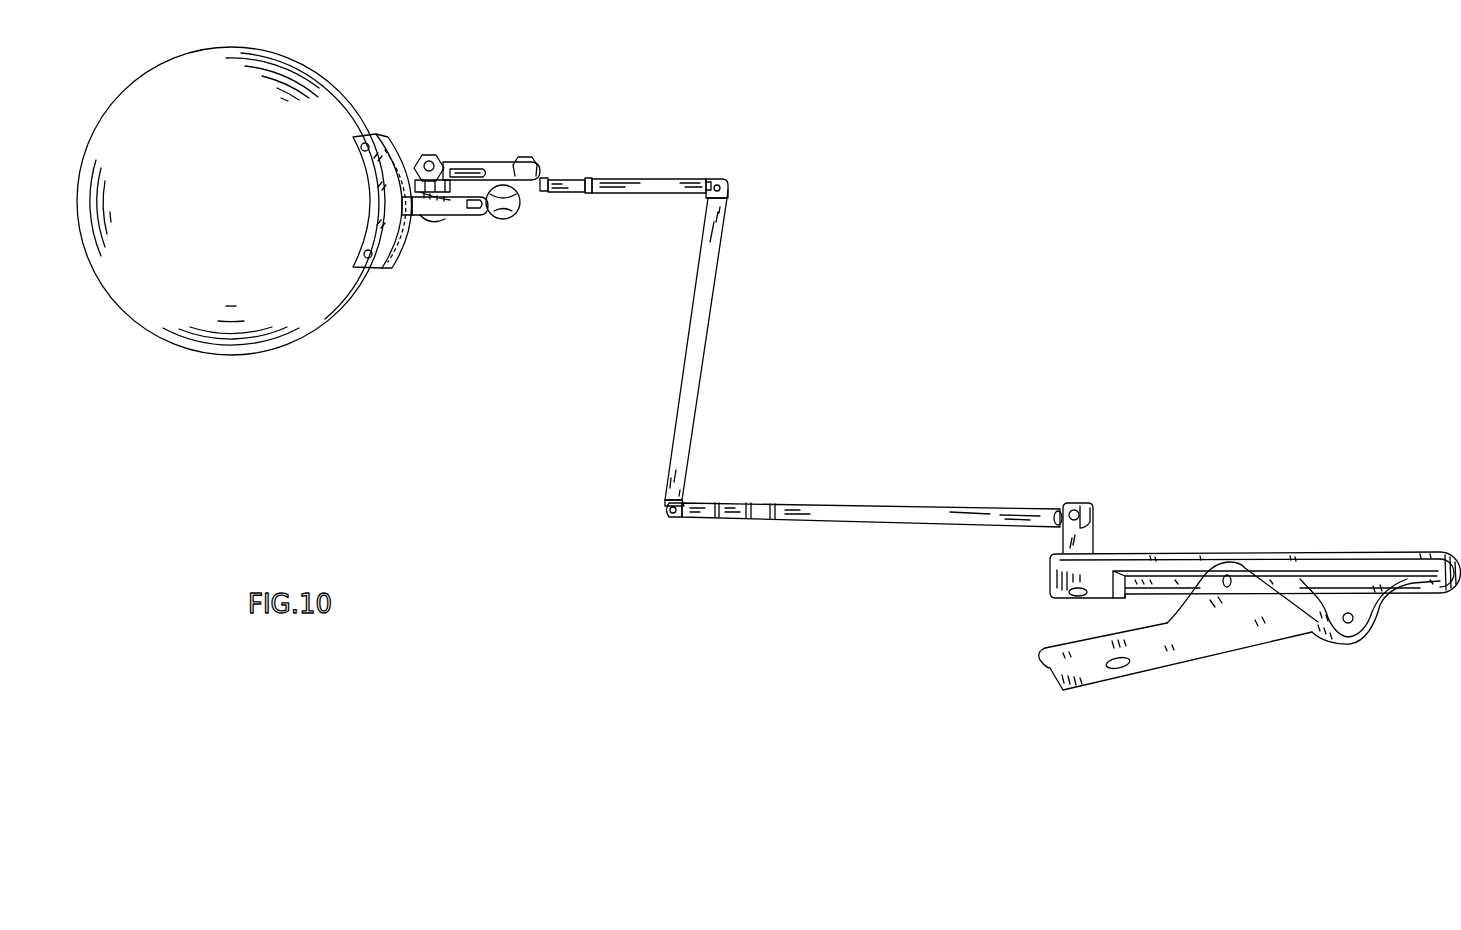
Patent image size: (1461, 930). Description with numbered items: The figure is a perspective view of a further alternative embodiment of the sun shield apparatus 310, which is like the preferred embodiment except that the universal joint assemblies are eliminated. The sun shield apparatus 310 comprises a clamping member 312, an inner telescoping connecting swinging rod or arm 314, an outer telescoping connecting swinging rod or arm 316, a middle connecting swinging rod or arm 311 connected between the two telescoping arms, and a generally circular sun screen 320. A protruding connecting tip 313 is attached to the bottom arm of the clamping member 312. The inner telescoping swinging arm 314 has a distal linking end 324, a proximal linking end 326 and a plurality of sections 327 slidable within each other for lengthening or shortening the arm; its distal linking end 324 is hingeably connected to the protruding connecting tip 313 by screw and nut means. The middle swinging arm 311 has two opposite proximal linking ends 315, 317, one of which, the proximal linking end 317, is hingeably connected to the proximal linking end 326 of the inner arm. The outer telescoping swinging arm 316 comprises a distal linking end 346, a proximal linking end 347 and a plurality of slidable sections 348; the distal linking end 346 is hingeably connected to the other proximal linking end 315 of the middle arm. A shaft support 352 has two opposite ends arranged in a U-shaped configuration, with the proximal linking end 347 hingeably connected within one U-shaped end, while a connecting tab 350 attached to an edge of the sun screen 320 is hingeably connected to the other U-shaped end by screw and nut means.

The sun shield apparatus 310 is at (1034, 255).
The middle connecting swinging rod or arm 311 is at (718, 313).
The clamping member 312 is at (1343, 647).
The protruding connecting tip 313 is at (1093, 543).
The inner telescoping connecting swinging rod or arm 314 is at (898, 503).
The proximal linking end 315 is at (724, 207).
The outer telescoping connecting swinging rod or arm 316 is at (606, 171).
The proximal linking end 317 is at (680, 482).
The sun screen 320 is at (277, 352).
The distal linking end 324 is at (1055, 513).
The proximal linking end 326 is at (692, 516).
The sections 327 is at (813, 516).
The distal linking end 346 is at (708, 180).
The proximal linking end 347 is at (546, 181).
The sections 348 is at (627, 192).
The connecting tab 350 is at (418, 212).
The shaft support 352 is at (467, 157).